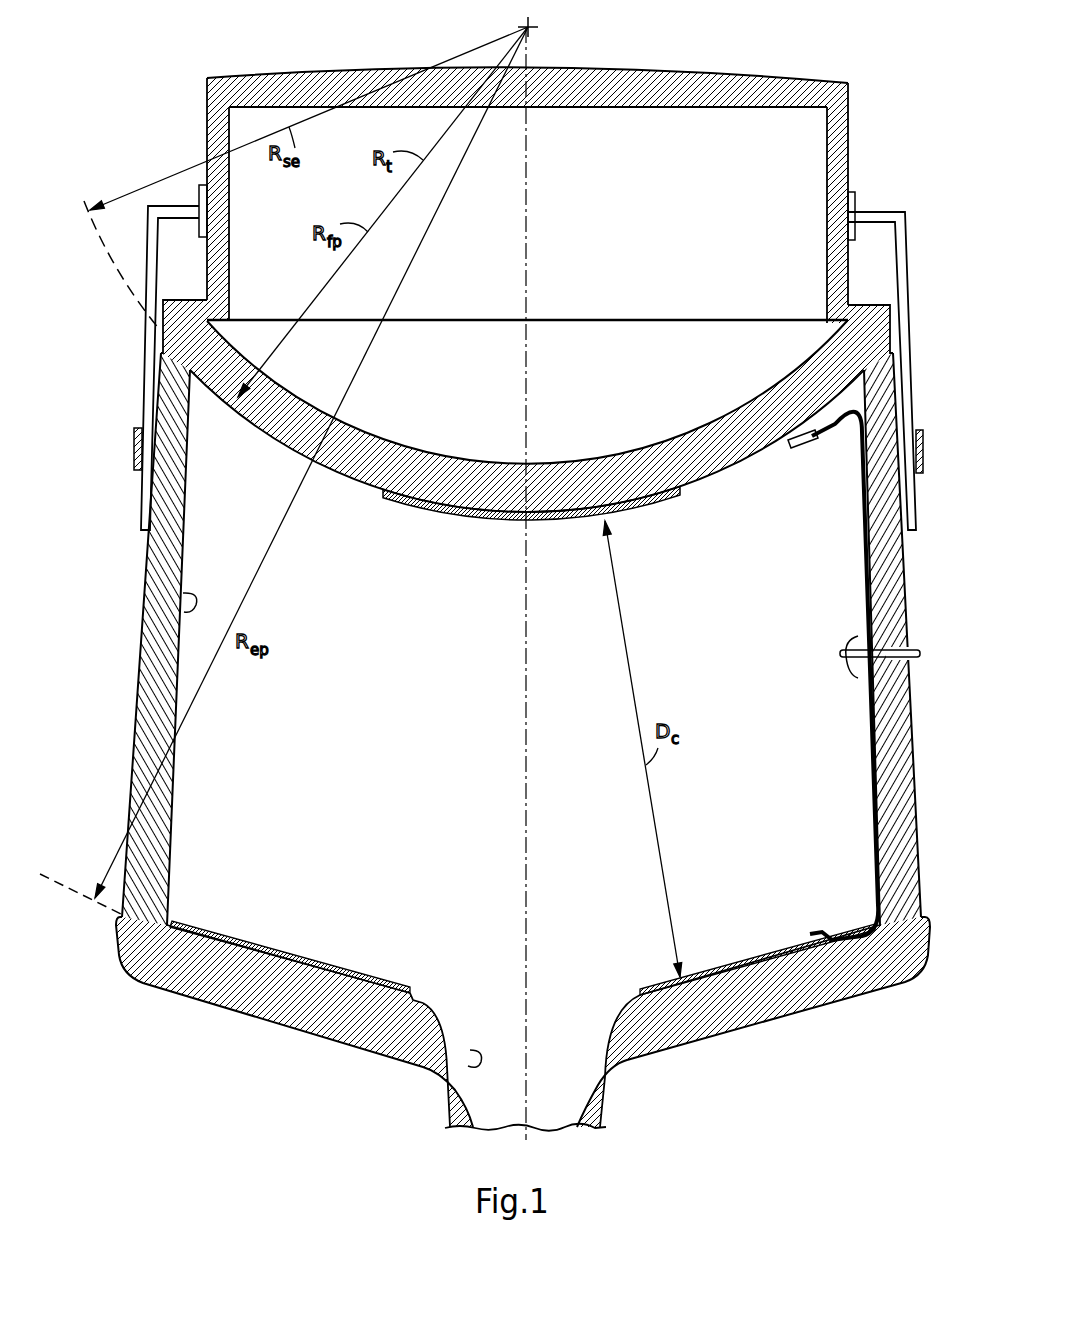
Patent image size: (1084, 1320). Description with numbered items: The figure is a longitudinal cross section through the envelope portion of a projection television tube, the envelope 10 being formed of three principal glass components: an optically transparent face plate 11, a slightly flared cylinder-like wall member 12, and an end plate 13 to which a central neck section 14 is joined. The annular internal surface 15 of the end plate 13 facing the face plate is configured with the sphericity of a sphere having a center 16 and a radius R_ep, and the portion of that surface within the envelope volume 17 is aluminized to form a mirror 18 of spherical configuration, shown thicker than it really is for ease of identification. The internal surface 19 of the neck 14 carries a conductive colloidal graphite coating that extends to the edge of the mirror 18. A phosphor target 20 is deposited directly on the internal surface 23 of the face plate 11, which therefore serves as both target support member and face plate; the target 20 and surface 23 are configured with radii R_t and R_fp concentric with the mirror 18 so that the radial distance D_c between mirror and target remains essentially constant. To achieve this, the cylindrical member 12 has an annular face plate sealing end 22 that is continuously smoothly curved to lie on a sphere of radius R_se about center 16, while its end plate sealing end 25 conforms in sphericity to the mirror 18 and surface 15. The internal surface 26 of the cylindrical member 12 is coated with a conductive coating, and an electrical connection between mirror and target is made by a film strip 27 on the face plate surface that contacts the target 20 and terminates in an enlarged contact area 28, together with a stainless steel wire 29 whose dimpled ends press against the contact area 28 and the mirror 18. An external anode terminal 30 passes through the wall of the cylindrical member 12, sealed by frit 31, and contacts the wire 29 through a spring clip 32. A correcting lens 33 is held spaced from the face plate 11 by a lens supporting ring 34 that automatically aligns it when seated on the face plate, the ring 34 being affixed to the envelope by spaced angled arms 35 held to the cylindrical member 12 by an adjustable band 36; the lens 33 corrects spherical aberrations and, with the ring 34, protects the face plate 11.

The projection television tube envelope 10 is at (138, 578).
The face plate 11 is at (737, 427).
The cylinder-like wall member 12 is at (160, 380).
The end plate 13 is at (255, 1020).
The neck section 14 is at (598, 1108).
The annular internal surface of end plate 15 is at (425, 993).
The center 16 is at (530, 26).
The envelope volume 17 is at (389, 741).
The mirror 18 is at (275, 955).
The internal surface of neck 19 is at (442, 1062).
The phosphor target 20 is at (437, 505).
The face plate sealing end 22 is at (880, 358).
The internal surface of face plate 23 is at (338, 478).
The end plate sealing end 25 is at (897, 985).
The internal surface of cylindrical member 26 is at (168, 618).
The film strip 27 is at (693, 500).
The contact area 28 is at (800, 450).
The electrically conductive wire 29 is at (852, 535).
The external anode terminal 30 is at (915, 652).
The frit 31 is at (905, 677).
The spring clip 32 is at (845, 655).
The correcting lens 33 is at (720, 88).
The lens supporting ring 34 is at (838, 135).
The angled arms 35 is at (882, 222).
The adjustable band 36 is at (918, 455).